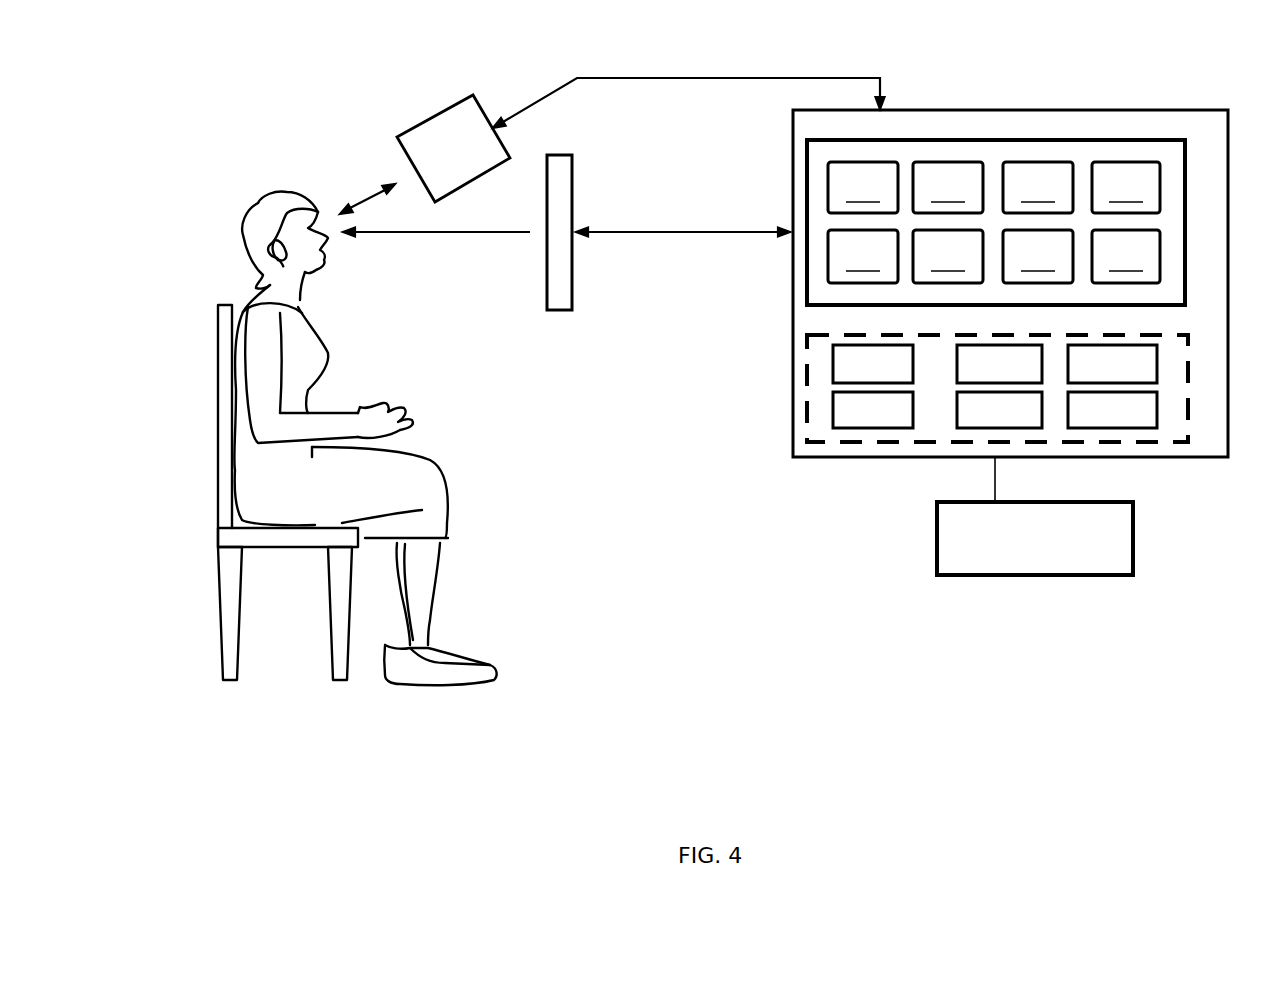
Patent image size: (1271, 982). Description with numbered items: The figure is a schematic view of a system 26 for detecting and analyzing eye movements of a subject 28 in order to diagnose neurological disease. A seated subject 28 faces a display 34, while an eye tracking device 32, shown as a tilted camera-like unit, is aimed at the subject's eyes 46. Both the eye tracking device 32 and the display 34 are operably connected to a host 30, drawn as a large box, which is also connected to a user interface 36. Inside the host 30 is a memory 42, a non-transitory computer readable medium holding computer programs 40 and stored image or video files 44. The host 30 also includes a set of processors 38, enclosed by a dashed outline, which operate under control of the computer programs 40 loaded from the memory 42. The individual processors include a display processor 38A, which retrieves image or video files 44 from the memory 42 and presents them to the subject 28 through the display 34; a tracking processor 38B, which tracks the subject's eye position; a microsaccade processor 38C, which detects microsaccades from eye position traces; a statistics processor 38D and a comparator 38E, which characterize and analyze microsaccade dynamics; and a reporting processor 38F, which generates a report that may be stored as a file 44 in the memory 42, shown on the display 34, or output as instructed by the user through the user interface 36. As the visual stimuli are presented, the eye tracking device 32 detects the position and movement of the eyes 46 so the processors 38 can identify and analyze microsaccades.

The system 26 is at (616, 735).
The subject 28 is at (263, 200).
The host 30 is at (867, 460).
The eye tracking device 32 is at (430, 113).
The display 34 is at (572, 293).
The user interface 36 is at (983, 573).
The processors 38 is at (803, 358).
The display processor 38A is at (848, 378).
The tracking processor 38B is at (848, 424).
The microsaccade processor 38C is at (973, 378).
The statistics processor 38D is at (973, 424).
The comparator 38E is at (1087, 378).
The reporting processor 38F is at (1087, 424).
The computer programs 40 is at (1081, 222).
The memory 42 is at (982, 140).
The image or video files 44 is at (863, 222).
The eyes 46 is at (308, 274).